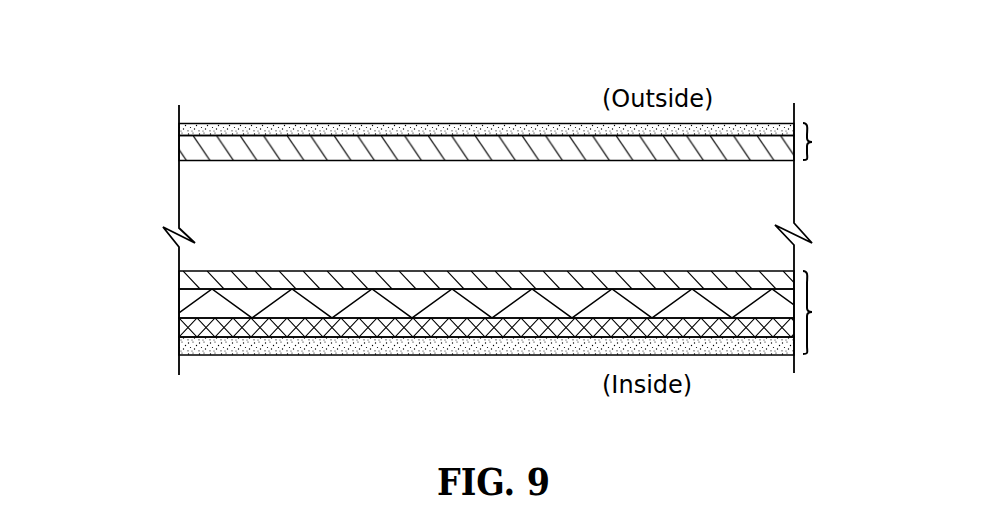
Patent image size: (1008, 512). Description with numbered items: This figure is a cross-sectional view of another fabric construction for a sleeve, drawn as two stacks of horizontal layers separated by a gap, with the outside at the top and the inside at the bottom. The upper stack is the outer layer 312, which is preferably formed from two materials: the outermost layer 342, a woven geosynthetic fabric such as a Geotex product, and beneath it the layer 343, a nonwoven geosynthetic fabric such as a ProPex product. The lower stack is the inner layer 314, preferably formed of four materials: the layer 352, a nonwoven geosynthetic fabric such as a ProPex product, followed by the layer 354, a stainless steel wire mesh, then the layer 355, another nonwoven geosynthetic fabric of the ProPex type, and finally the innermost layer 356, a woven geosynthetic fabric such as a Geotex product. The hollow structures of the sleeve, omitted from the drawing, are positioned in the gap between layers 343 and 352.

The outer layer 312 is at (812, 142).
The inner layer 314 is at (812, 312).
The woven geosynthetic fabric layer 342 is at (179, 132).
The nonwoven geosynthetic fabric layer 343 is at (179, 147).
The nonwoven geosynthetic fabric layer 352 is at (179, 282).
The stainless steel wire mesh 354 is at (179, 305).
The nonwoven geosynthetic fabric layer 355 is at (179, 325).
The woven geosynthetic fabric layer 356 is at (179, 350).